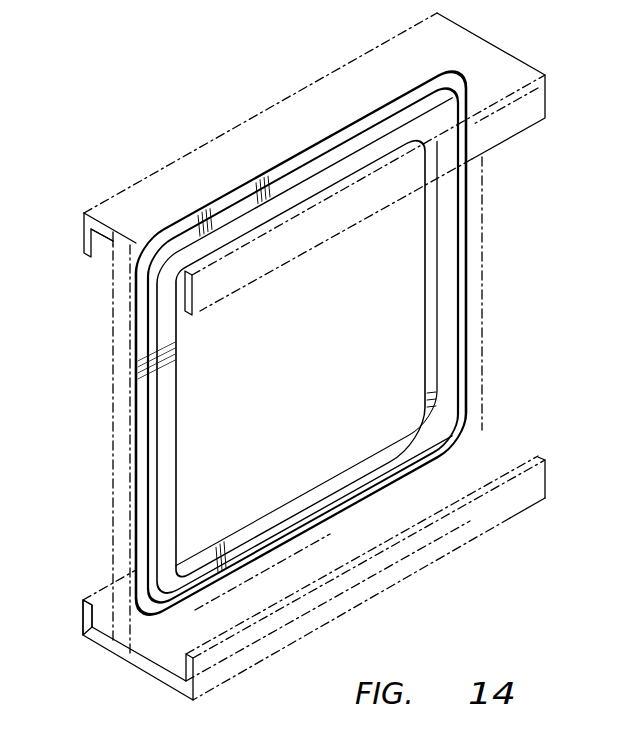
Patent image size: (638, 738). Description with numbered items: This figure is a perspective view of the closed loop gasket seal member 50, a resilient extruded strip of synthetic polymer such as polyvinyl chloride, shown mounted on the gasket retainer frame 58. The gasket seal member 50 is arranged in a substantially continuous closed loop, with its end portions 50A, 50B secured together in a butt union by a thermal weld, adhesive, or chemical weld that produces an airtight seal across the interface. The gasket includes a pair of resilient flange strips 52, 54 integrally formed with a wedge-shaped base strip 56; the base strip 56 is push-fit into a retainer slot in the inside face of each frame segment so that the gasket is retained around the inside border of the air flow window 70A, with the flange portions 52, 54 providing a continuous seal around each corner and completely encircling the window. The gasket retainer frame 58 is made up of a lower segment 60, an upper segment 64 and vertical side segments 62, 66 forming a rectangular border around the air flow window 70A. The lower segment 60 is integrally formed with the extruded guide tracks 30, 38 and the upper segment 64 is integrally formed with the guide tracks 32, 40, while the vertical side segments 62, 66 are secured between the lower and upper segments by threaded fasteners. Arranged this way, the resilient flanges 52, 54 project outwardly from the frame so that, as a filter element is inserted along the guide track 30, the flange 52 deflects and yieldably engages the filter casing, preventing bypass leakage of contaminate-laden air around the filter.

The guide track 30 is at (217, 673).
The guide track 32 is at (148, 288).
The guide track 38 is at (84, 616).
The guide track 40 is at (84, 240).
The gasket seal member 50 is at (467, 360).
The end portion of gasket 50A is at (447, 296).
The end portion of gasket 50B is at (446, 224).
The resilient flange strip 52 is at (290, 203).
The resilient flange strip 54 is at (238, 188).
The wedge-shaped base strip 56 is at (143, 480).
The gasket retainer frame 58 is at (533, 63).
The lower frame segment 60 is at (331, 556).
The vertical side frame segment 62 is at (478, 194).
The upper frame segment 64 is at (113, 248).
The vertical side frame segment 66 is at (113, 402).
The air flow window 70A is at (318, 356).